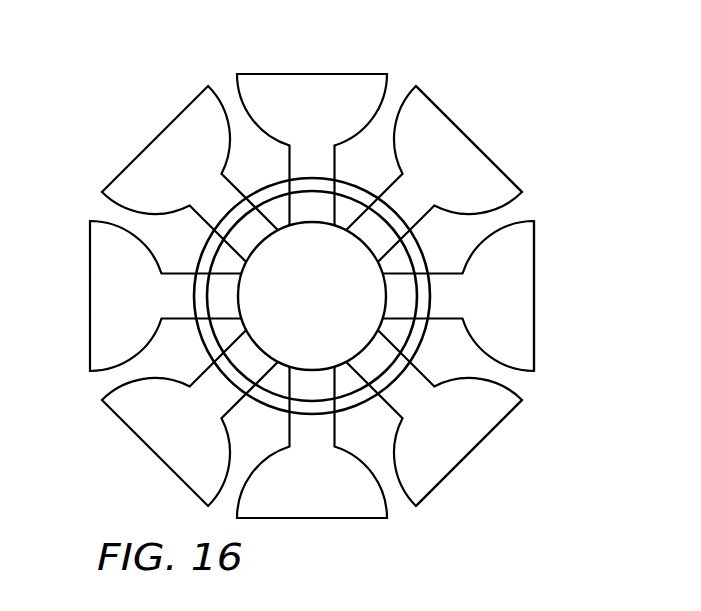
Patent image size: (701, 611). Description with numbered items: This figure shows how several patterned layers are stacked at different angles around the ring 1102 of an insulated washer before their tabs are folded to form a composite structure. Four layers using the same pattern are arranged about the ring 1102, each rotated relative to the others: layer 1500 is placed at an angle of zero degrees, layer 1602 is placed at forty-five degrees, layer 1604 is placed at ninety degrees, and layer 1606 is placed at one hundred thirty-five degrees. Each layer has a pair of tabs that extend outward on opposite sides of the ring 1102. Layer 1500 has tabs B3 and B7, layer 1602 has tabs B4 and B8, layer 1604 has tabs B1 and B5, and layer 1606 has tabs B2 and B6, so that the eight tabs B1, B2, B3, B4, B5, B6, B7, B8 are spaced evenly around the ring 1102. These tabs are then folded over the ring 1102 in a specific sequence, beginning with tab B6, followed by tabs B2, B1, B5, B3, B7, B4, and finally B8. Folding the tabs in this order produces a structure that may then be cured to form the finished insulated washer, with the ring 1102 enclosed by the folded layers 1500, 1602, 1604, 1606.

The ring 1102 is at (265, 180).
The pattern 1500 is at (348, 73).
The layer 1602 is at (462, 80).
The layer 1604 is at (536, 335).
The layer 1606 is at (442, 488).
The tab B1 is at (147, 296).
The tab B2 is at (208, 192).
The tab B3 is at (318, 123).
The tab B4 is at (415, 176).
The tab B5 is at (503, 296).
The tab B6 is at (415, 416).
The tab B7 is at (312, 463).
The tab B8 is at (208, 399).